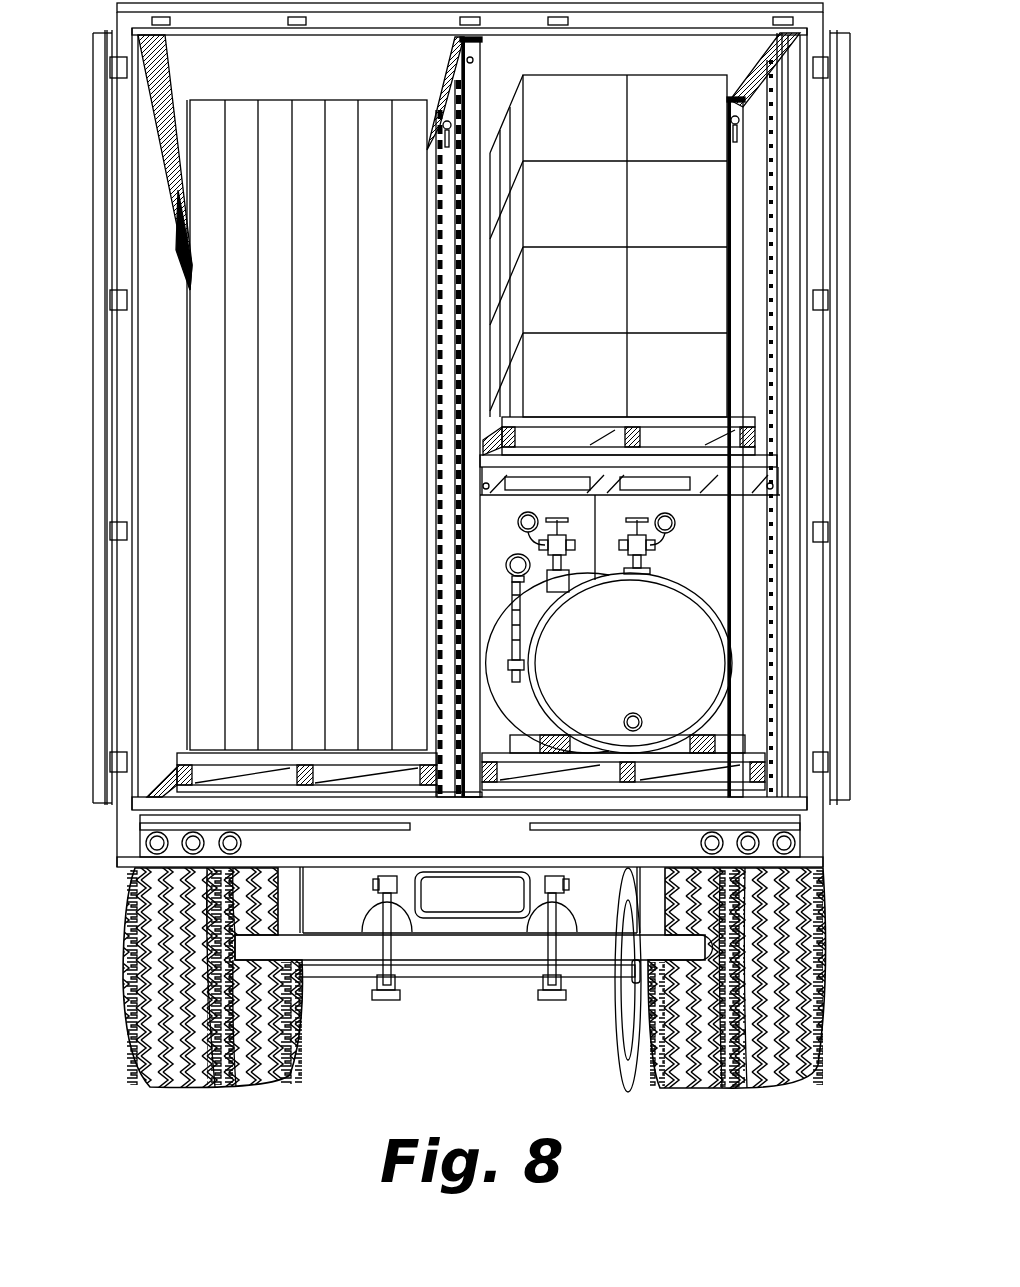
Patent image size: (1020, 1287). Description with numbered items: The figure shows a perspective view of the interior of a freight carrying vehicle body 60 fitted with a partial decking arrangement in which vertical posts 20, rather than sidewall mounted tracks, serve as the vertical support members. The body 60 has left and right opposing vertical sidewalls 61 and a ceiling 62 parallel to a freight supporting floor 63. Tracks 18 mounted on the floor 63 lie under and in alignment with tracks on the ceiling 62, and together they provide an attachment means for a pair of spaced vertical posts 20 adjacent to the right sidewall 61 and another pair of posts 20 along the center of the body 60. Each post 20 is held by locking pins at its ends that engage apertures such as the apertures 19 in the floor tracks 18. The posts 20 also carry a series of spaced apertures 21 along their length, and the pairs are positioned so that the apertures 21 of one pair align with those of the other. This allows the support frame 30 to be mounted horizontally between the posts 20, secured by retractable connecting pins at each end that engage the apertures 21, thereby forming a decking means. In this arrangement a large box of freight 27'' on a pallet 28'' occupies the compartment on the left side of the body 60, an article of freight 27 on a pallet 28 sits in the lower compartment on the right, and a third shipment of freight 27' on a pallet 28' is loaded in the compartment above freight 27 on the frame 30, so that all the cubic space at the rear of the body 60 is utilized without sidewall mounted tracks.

The floor track 18 is at (450, 75).
The track aperture 19 is at (478, 42).
The vertical post 20 is at (460, 576).
The post aperture 21 is at (458, 630).
The article of freight 27 is at (615, 632).
The third shipment of freight 27' is at (608, 246).
The large box of freight 27'' is at (307, 425).
The pallet 28 is at (689, 742).
The pallet 28' is at (619, 414).
The pallet 28'' is at (292, 753).
The support frame 30 is at (688, 503).
The body 60 is at (84, 407).
The sidewall 61 is at (172, 461).
The ceiling 62 is at (323, 75).
The freight supporting floor 63 is at (740, 793).